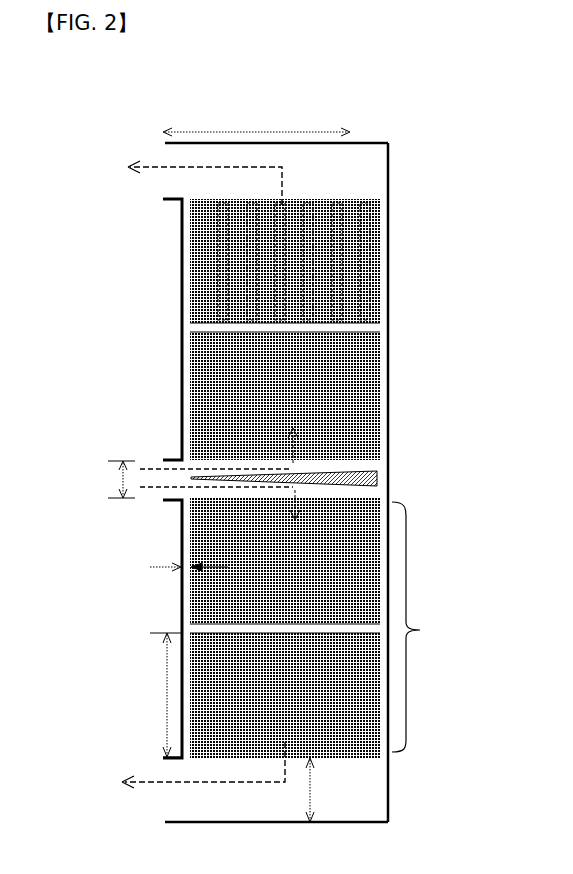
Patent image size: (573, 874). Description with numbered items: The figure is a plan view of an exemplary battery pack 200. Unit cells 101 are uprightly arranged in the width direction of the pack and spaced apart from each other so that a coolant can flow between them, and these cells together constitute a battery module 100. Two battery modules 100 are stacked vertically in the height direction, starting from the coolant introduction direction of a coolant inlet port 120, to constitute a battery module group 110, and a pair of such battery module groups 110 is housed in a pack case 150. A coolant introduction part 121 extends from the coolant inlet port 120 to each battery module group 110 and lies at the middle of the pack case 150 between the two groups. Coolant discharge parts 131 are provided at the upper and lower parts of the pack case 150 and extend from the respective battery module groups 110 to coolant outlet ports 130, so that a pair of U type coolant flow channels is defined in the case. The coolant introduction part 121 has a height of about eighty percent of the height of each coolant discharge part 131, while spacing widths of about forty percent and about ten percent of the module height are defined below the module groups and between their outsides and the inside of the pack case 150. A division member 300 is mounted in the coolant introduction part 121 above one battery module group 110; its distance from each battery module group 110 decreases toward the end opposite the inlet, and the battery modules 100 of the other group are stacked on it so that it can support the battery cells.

The battery pack 200 is at (77, 132).
The battery module 100 is at (398, 268).
The unit cells 101 is at (213, 268).
The battery module group 110 is at (423, 627).
The coolant inlet port 120 is at (172, 500).
The coolant introduction part 121 is at (380, 480).
The coolant outlet port 130 is at (168, 178).
The coolant discharge part 131 is at (373, 172).
The pack case 150 is at (180, 402).
The division member 300 is at (352, 468).